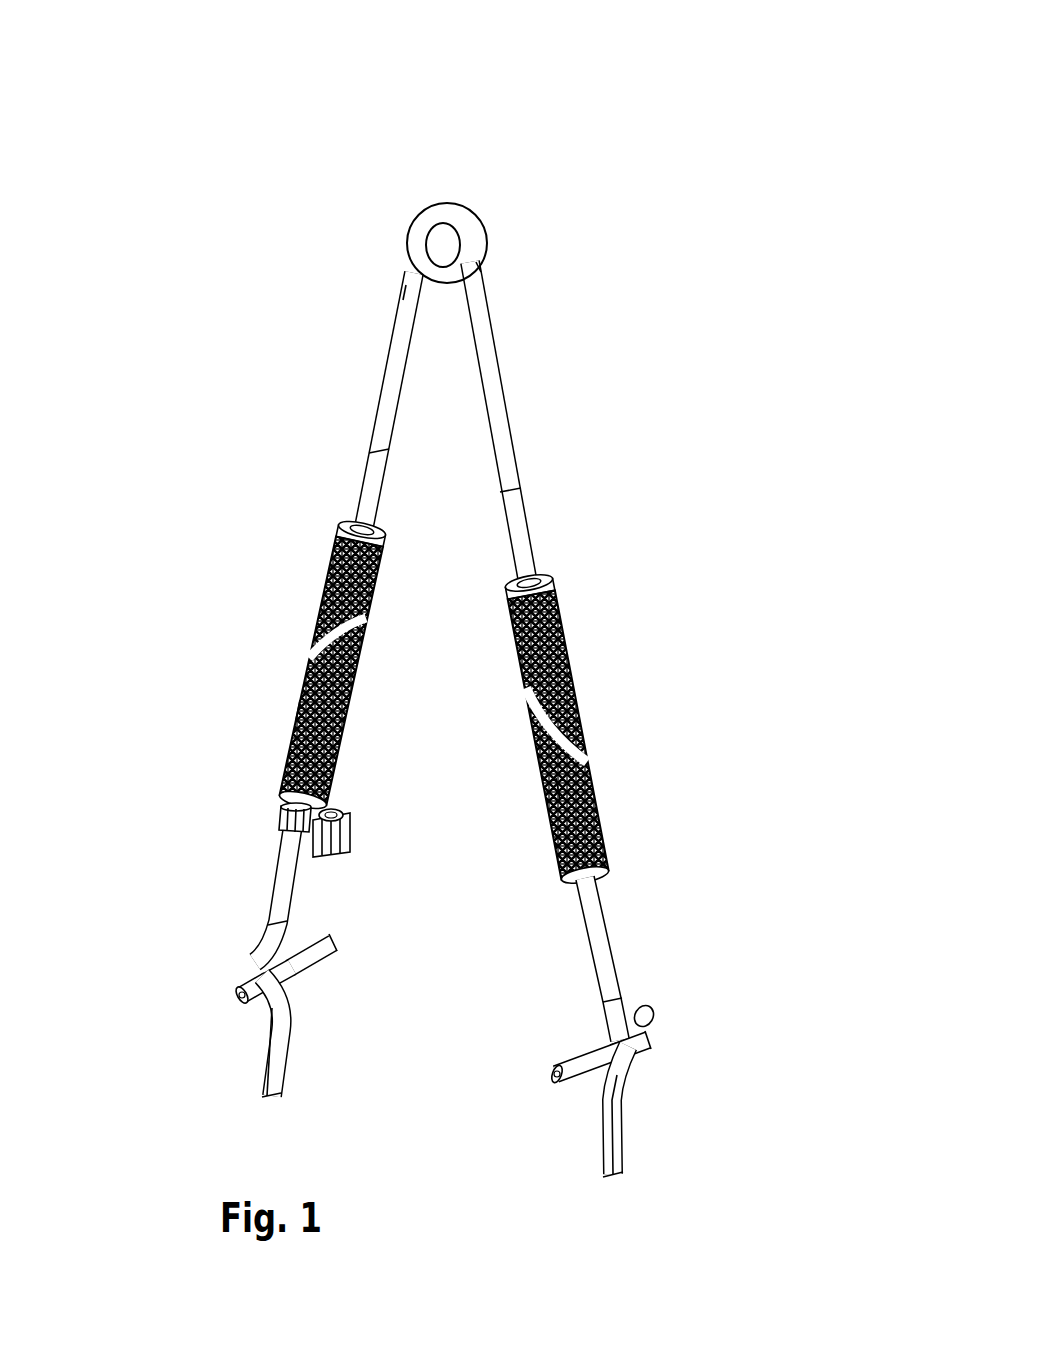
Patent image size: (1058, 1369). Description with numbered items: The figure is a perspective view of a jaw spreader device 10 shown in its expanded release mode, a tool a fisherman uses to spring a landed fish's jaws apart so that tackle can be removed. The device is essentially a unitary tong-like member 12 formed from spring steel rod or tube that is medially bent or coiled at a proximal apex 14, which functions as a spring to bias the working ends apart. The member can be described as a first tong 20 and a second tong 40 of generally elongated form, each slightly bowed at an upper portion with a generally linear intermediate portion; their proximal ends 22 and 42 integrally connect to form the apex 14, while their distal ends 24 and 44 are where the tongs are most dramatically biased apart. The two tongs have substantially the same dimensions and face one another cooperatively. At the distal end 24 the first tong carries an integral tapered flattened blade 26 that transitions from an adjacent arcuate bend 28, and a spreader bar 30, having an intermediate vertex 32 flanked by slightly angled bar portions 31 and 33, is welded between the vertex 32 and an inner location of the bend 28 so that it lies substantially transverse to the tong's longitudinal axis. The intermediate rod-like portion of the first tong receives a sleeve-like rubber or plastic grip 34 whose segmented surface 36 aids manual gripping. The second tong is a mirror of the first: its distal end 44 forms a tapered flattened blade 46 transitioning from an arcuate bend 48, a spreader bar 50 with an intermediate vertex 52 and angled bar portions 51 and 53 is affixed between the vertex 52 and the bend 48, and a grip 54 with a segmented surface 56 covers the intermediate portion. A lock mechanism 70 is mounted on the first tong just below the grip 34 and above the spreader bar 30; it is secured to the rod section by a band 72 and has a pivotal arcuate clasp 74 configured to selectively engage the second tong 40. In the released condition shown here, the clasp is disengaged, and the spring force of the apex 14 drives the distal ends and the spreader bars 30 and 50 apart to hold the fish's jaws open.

The jaw spreader device 10 is at (431, 108).
The unitary tong-like member 12 is at (368, 385).
The proximal apex 14 is at (451, 193).
The first tong 20 is at (405, 348).
The proximal end of first tong 22 is at (427, 238).
The distal end of first tong 24 is at (268, 1098).
The tapered flattened blade 26 is at (285, 1078).
The arcuate bend 28 is at (252, 960).
The spreader bar 30 is at (310, 968).
The bar portion 31 is at (248, 992).
The intermediate vertex 32 is at (290, 970).
The bar portion 33 is at (315, 935).
The grip 34 is at (320, 612).
The segmented surface 36 is at (295, 705).
The second tong 40 is at (513, 457).
The proximal end of second tong 42 is at (481, 255).
The distal end of second tong 44 is at (620, 1165).
The tapered flattened blade 46 is at (620, 1135).
The arcuate bend 48 is at (652, 1052).
The spreader bar 50 is at (602, 1035).
The bar portion 51 is at (567, 1085).
The intermediate vertex 52 is at (605, 1042).
The bar portion 53 is at (650, 1010).
The grip 54 is at (578, 668).
The segmented surface 56 is at (553, 782).
The lock mechanism 70 is at (272, 806).
The band 72 is at (287, 820).
The pivotal arcuate clasp 74 is at (345, 852).